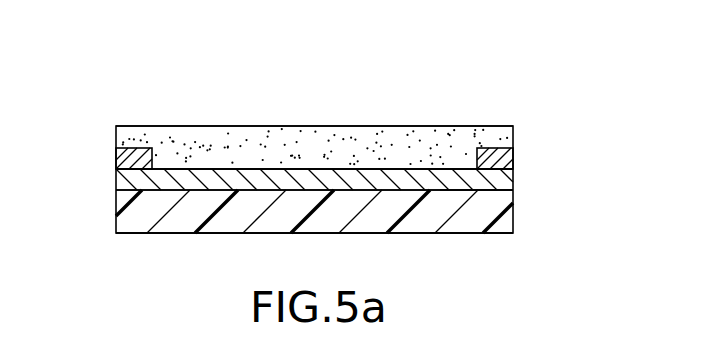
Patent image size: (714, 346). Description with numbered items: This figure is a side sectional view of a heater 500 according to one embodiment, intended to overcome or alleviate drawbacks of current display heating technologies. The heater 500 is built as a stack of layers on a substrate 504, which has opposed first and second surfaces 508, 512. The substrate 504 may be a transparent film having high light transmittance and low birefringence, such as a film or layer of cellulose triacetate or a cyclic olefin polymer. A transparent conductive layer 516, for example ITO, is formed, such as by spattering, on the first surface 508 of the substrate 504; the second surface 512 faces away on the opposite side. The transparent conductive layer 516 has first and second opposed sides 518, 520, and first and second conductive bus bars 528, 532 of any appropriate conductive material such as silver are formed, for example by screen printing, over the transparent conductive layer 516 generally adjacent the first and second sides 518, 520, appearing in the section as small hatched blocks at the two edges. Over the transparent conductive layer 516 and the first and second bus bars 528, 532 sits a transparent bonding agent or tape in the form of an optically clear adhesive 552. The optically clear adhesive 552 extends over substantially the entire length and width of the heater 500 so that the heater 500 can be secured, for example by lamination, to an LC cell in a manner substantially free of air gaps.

The heater 500 is at (93, 118).
The substrate 504 is at (123, 217).
The first surface 508 is at (492, 190).
The second surface 512 is at (473, 233).
The transparent conductive layer 516 is at (243, 180).
The first side 518 is at (118, 180).
The second side 520 is at (502, 170).
The first conductive bus bar 528 is at (127, 160).
The second conductive bus bar 532 is at (500, 158).
The optically clear adhesive 552 is at (122, 135).